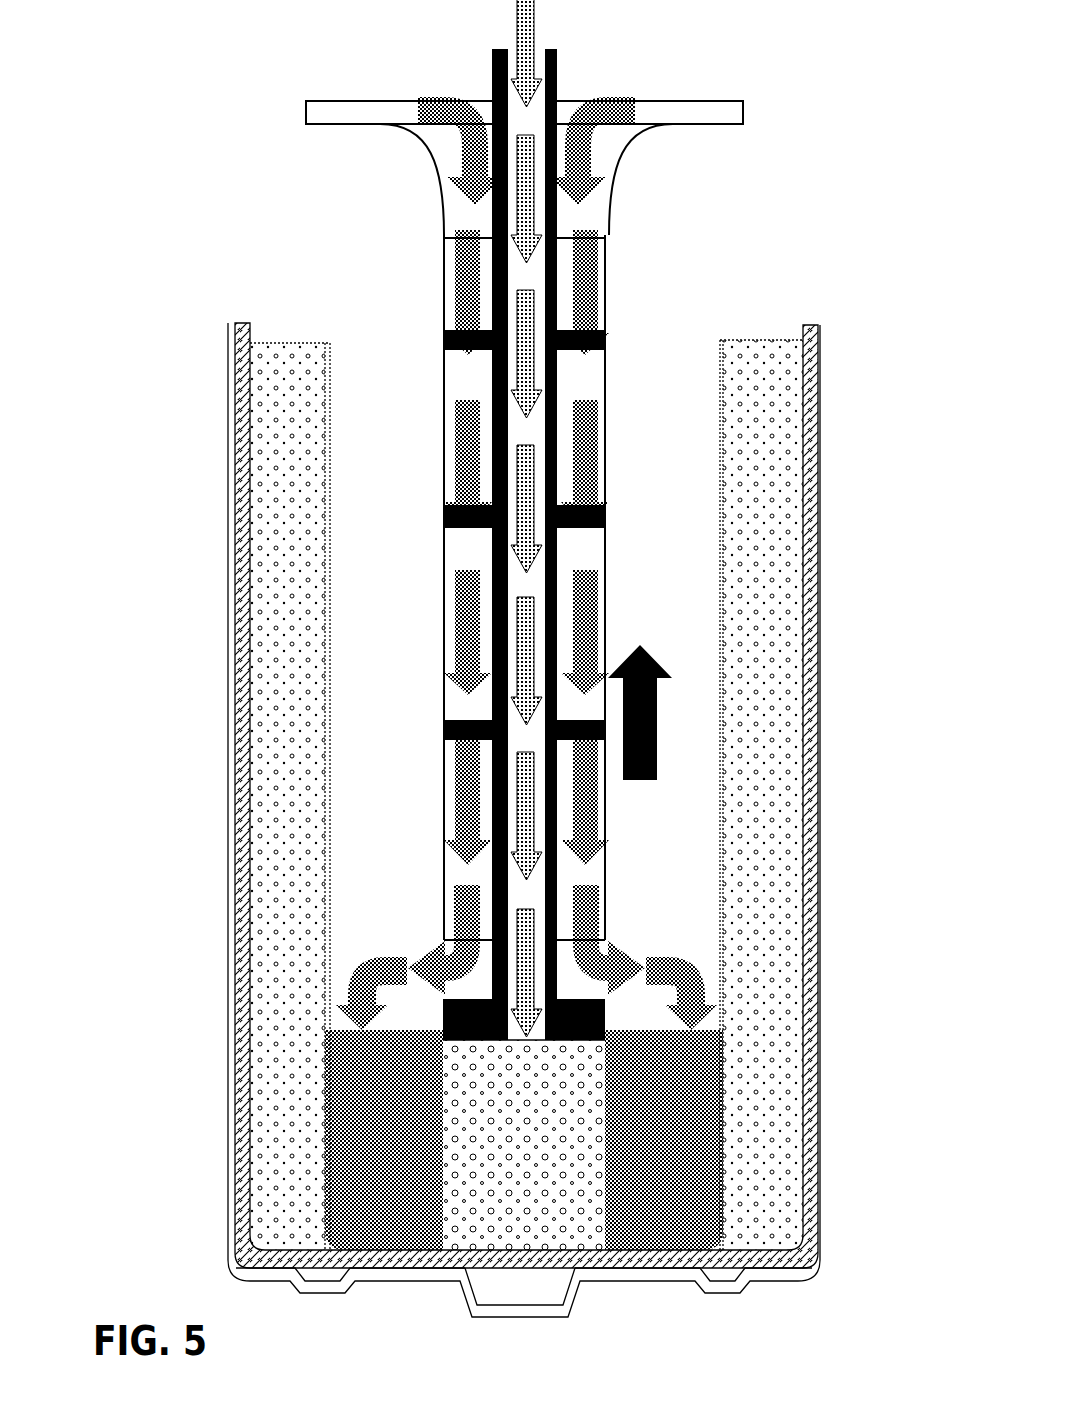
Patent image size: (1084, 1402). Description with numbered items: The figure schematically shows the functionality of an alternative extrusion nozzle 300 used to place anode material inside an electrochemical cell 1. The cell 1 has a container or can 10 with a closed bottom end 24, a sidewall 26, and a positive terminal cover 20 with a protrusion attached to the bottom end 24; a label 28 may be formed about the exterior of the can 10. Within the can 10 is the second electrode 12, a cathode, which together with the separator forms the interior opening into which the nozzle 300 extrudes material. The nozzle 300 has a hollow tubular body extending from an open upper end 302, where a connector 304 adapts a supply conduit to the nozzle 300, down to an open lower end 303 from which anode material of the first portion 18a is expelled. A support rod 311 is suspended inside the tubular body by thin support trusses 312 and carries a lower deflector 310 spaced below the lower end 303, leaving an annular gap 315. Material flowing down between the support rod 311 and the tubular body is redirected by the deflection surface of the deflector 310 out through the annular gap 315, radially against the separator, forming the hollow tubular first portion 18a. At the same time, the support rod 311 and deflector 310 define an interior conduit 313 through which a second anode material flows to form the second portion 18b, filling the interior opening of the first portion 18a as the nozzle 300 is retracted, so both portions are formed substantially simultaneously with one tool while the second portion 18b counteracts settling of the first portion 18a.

The electrochemical cell 1 is at (815, 598).
The container or can 10 is at (815, 462).
The second electrode 12 is at (760, 932).
The first portion of the first electrode 18a is at (458, 437).
The second portion of the first electrode 18b is at (517, 48).
The positive terminal cover 20 is at (600, 1276).
The closed bottom end 24 is at (430, 1266).
The sidewall 26 is at (237, 830).
The label 28 is at (253, 580).
The nozzle 300 is at (514, 637).
The open upper end 302 is at (455, 240).
The open lower end 303 is at (603, 930).
The connector 304 is at (410, 138).
The lower deflector 310 is at (320, 1093).
The support rod 311 is at (557, 555).
The support truss 312 is at (455, 535).
The interior conduit 313 is at (513, 803).
The annular gap 315 is at (422, 927).